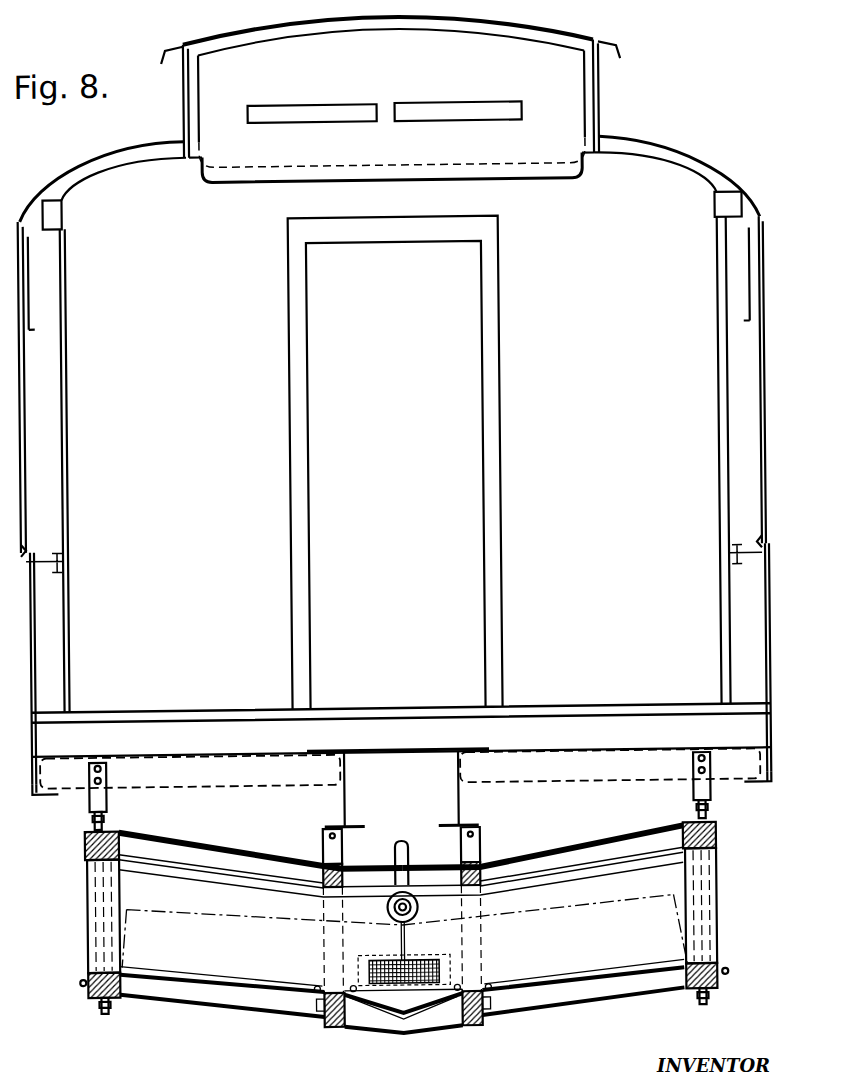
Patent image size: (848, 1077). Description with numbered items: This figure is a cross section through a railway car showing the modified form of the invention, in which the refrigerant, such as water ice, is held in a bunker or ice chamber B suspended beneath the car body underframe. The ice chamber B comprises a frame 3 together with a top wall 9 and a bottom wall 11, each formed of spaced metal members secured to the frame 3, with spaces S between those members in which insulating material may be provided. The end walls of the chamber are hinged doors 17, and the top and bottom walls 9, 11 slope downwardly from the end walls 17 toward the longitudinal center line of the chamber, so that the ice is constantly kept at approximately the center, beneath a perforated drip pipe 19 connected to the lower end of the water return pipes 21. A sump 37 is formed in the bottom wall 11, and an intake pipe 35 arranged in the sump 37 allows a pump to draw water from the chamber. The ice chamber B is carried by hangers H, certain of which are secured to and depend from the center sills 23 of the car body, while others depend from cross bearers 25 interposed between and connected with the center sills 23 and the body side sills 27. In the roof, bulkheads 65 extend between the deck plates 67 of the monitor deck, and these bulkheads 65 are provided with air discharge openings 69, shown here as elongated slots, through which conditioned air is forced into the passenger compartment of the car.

The deck plate 67 is at (186, 97).
The air discharge opening 69 is at (315, 109).
The bulkhead 65 is at (254, 150).
The cross bearer 25 is at (209, 762).
The center sill 23 is at (455, 775).
The body side sill 27 is at (37, 790).
The hanger H is at (92, 797).
The frame 3 is at (82, 842).
The space S is at (215, 858).
The top wall 9 is at (552, 870).
The hinged door 17 is at (84, 908).
The water return pipe 21 is at (397, 841).
The perforated drip pipe 19 is at (407, 898).
The bottom wall 11 is at (520, 987).
The intake pipe 35 is at (393, 1013).
The sump 37 is at (413, 1006).
The ice chamber B is at (318, 1010).